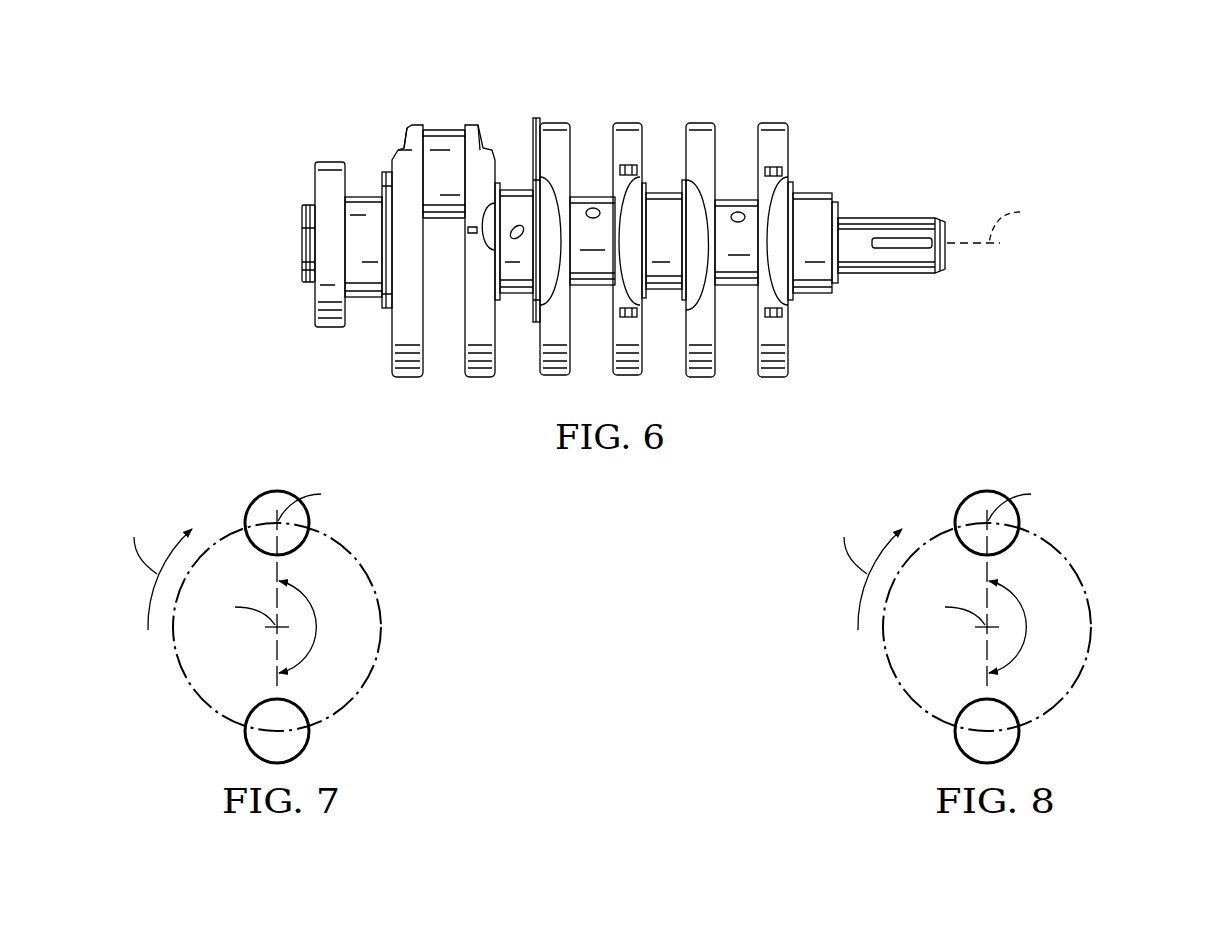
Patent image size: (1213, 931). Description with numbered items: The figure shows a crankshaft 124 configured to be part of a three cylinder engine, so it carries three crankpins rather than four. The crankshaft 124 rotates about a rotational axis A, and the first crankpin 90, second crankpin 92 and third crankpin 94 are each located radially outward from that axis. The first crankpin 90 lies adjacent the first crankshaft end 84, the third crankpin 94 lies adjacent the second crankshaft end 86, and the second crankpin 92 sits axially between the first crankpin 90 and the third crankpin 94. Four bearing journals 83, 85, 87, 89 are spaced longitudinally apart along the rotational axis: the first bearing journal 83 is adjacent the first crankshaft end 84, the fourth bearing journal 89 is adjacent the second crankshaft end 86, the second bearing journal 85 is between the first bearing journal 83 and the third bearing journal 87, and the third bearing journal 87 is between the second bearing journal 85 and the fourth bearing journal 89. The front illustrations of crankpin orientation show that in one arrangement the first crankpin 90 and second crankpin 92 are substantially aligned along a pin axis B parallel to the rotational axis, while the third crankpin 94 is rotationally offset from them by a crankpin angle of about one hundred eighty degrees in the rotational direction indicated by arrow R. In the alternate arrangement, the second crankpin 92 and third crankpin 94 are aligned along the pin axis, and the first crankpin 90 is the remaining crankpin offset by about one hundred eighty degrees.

In FIG. 6, the crankshaft 124 is at (643, 197).
In FIG. 7, the crankshaft 124 is at (302, 611).
In FIG. 8, the crankshaft 124 is at (1012, 611).
In FIG. 6, the first bearing journal 83 is at (808, 293).
In FIG. 6, the first crankshaft end 84 is at (947, 230).
In FIG. 6, the second bearing journal 85 is at (660, 193).
In FIG. 6, the second crankshaft end 86 is at (302, 244).
In FIG. 6, the third bearing journal 87 is at (515, 190).
In FIG. 6, the fourth bearing journal 89 is at (374, 192).
In FIG. 6, the first crankpin 90 is at (728, 200).
In FIG. 7, the first crankpin 90 is at (248, 503).
In FIG. 8, the first crankpin 90 is at (1018, 747).
In FIG. 6, the second crankpin 92 is at (607, 197).
In FIG. 7, the second crankpin 92 is at (277, 491).
In FIG. 8, the second crankpin 92 is at (958, 503).
In FIG. 6, the third crankpin 94 is at (445, 130).
In FIG. 7, the third crankpin 94 is at (308, 747).
In FIG. 8, the third crankpin 94 is at (987, 491).